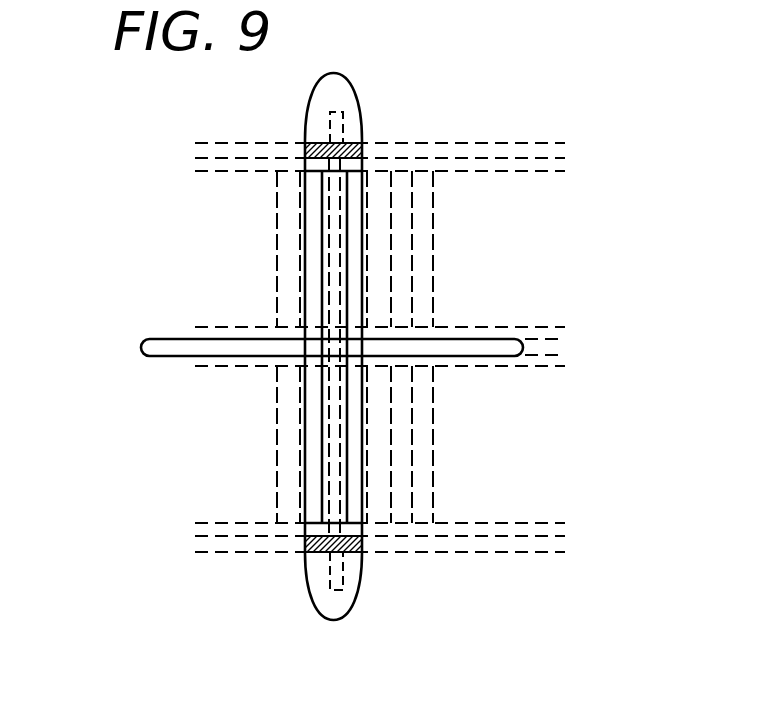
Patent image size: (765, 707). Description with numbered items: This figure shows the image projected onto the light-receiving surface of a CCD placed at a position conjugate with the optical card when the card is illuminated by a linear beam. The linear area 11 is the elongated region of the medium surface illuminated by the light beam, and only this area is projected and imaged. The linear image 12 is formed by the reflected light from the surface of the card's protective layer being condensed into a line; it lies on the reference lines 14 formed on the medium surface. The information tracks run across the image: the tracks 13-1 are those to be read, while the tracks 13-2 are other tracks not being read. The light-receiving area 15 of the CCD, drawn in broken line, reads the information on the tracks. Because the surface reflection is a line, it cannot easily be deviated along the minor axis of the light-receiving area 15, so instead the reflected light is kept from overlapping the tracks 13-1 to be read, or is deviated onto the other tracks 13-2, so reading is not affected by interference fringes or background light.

The linear area 11 is at (352, 85).
The linear image 12 is at (147, 357).
The tracks to be read 13-1 is at (350, 277).
The other tracks 13-2 is at (382, 497).
The reference line 14 is at (565, 148).
The light-receiving area 15 is at (340, 134).